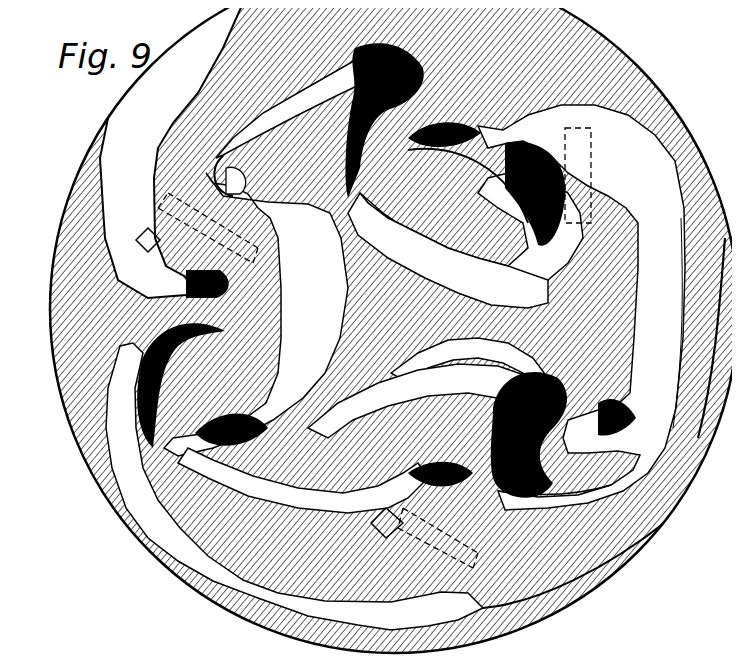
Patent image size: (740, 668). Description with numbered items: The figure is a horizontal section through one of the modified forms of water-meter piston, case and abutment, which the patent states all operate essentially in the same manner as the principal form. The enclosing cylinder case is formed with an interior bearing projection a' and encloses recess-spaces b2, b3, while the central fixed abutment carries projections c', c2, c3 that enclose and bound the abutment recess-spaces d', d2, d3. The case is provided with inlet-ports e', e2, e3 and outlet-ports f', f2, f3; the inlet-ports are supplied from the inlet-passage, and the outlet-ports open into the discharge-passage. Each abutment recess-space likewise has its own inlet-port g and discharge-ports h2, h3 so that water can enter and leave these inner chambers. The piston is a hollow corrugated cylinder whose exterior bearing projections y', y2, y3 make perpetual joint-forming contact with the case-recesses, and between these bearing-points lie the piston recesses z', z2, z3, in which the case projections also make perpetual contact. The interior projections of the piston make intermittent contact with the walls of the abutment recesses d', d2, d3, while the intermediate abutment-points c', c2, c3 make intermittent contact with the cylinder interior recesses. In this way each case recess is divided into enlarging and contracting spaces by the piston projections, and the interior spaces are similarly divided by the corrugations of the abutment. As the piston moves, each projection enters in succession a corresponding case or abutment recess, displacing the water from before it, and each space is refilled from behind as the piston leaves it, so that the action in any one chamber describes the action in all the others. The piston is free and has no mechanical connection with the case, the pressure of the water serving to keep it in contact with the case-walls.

The recess-space b3 is at (171, 153).
The abutment projection c3 is at (297, 104).
The outlet-port f3 is at (385, 127).
The exterior bearing projection y3 is at (343, 172).
The inlet-port e' is at (581, 307).
The inlet-port g is at (588, 175).
The piston recess z' is at (468, 200).
The interior bearing projection a' is at (509, 194).
The abutment recess-space d' is at (465, 240).
The discharge-port h3 is at (197, 228).
The inlet-port e3 is at (193, 283).
The abutment recess-space d3 is at (234, 234).
The piston recess z3 is at (256, 314).
The abutment projection c' is at (664, 328).
The outlet-port f' is at (620, 417).
The exterior bearing projection y' is at (556, 467).
The outlet-port f2 is at (294, 486).
The exterior bearing projection y2 is at (352, 425).
The abutment recess-space d2 is at (430, 395).
The piston recess z2 is at (472, 378).
The inlet-port e2 is at (440, 456).
The abutment projection c2 is at (303, 480).
The recess-space b2 is at (222, 530).
The discharge-port h2 is at (424, 538).